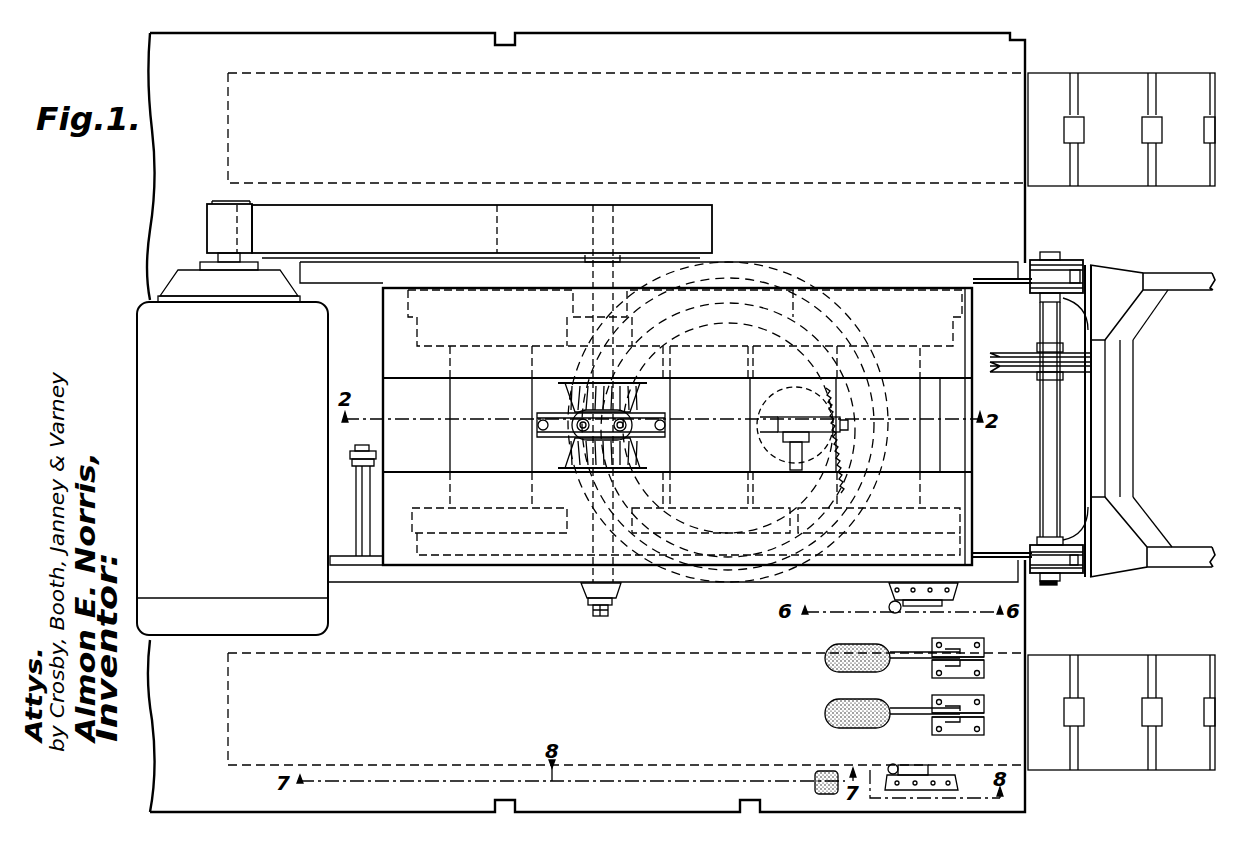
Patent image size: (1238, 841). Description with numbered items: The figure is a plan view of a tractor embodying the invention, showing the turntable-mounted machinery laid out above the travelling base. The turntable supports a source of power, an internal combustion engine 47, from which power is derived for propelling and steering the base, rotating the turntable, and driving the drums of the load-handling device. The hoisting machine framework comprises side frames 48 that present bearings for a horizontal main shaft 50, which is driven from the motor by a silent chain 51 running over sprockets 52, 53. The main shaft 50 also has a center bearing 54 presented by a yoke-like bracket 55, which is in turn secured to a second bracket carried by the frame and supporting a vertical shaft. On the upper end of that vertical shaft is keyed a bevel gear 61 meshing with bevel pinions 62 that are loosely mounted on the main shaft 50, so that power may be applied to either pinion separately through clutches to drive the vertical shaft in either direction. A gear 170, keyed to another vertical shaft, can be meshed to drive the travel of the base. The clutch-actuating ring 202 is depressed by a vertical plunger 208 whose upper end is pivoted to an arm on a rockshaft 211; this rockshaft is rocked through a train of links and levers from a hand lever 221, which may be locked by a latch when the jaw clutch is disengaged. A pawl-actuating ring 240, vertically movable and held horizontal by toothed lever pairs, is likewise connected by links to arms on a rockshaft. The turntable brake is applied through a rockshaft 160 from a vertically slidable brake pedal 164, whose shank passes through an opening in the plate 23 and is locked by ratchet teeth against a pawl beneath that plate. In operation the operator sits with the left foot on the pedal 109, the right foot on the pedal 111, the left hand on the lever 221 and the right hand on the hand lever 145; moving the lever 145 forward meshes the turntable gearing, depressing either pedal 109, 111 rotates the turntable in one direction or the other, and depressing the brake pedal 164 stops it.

The plate 23 is at (1018, 636).
The internal combustion engine 47 is at (328, 334).
The side frames 48 is at (836, 268).
The main shaft 50 is at (613, 235).
The silent chain 51 is at (368, 218).
The sprocket 52 is at (240, 235).
The sprocket 53 is at (497, 232).
The center bearing 54 is at (565, 452).
The yoke-like bracket 55 is at (565, 405).
The bevel gear 61 is at (632, 440).
The bevel pinions 62 is at (640, 395).
The pedal 109 is at (826, 662).
The pedal 111 is at (826, 706).
The hand lever 145 is at (905, 760).
The rockshaft 160 is at (370, 492).
The brake pedal 164 is at (828, 771).
The gear 170 is at (790, 385).
The ring 202 is at (672, 338).
The vertical plunger 208 is at (810, 417).
The rockshaft 211 is at (785, 462).
The hand lever 221 is at (889, 607).
The pawl-actuating ring 240 is at (805, 552).